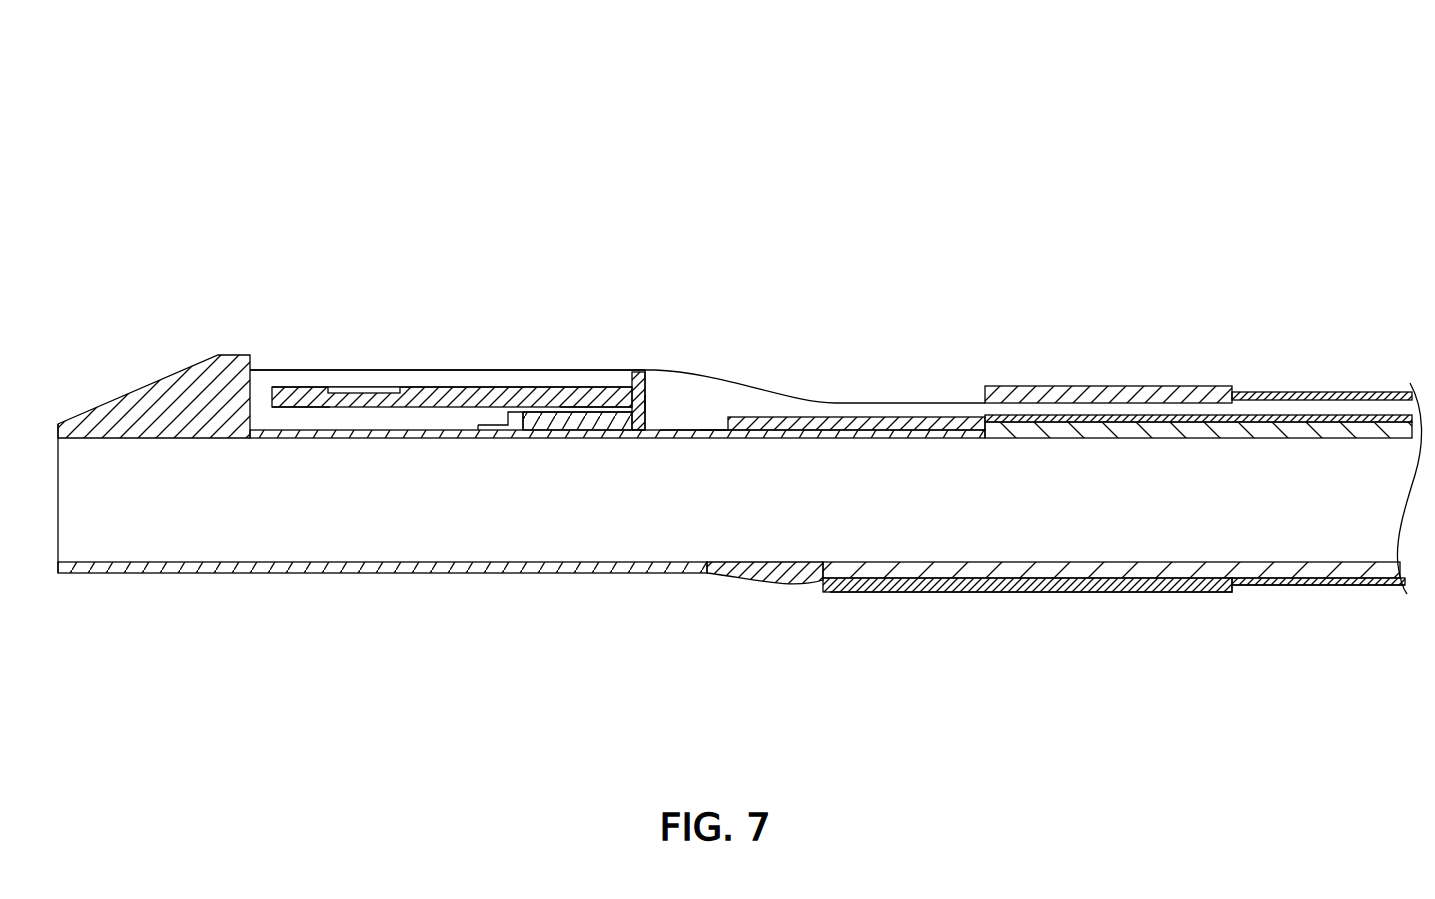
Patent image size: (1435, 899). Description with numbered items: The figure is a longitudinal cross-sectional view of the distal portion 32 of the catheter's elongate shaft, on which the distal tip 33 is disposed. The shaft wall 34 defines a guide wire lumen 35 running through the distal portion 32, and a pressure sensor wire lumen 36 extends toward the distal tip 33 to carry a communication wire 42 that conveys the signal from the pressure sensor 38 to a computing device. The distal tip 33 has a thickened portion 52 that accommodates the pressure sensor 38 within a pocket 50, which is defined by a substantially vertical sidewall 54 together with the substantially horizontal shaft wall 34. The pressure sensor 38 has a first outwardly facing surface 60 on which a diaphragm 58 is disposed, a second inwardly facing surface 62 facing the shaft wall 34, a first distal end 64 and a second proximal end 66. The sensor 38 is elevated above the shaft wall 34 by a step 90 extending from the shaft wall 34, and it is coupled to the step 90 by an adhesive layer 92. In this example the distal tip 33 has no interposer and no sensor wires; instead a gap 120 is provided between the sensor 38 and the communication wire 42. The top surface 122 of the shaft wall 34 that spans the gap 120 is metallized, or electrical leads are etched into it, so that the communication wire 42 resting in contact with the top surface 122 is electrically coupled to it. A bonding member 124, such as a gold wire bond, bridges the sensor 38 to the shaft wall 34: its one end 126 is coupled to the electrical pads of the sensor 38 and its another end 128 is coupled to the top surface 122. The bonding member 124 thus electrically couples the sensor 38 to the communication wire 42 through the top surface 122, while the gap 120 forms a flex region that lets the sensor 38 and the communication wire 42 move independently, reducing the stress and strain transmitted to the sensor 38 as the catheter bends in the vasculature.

The distal portion 32 is at (985, 715).
The distal tip 33 is at (352, 180).
The shaft wall 34 is at (372, 436).
The guide wire lumen 35 is at (890, 515).
The pressure sensor wire lumen 36 is at (1375, 392).
The pressure sensor 38 is at (470, 396).
The communication wire 42 is at (833, 418).
The pocket 50 is at (452, 370).
The thickened portion 52 is at (742, 390).
The sidewall 54 is at (252, 368).
The diaphragm 58 is at (364, 388).
The first outwardly facing surface 60 is at (498, 386).
The second inwardly facing surface 62 is at (298, 408).
The first distal end 64 is at (605, 396).
The second proximal end 66 is at (303, 392).
The step 90 is at (548, 424).
The adhesive layer 92 is at (527, 423).
The gap 120 is at (697, 410).
The top surface 122 is at (708, 410).
The bonding member 124 is at (652, 403).
The one end 126 is at (630, 372).
The another end 128 is at (638, 428).